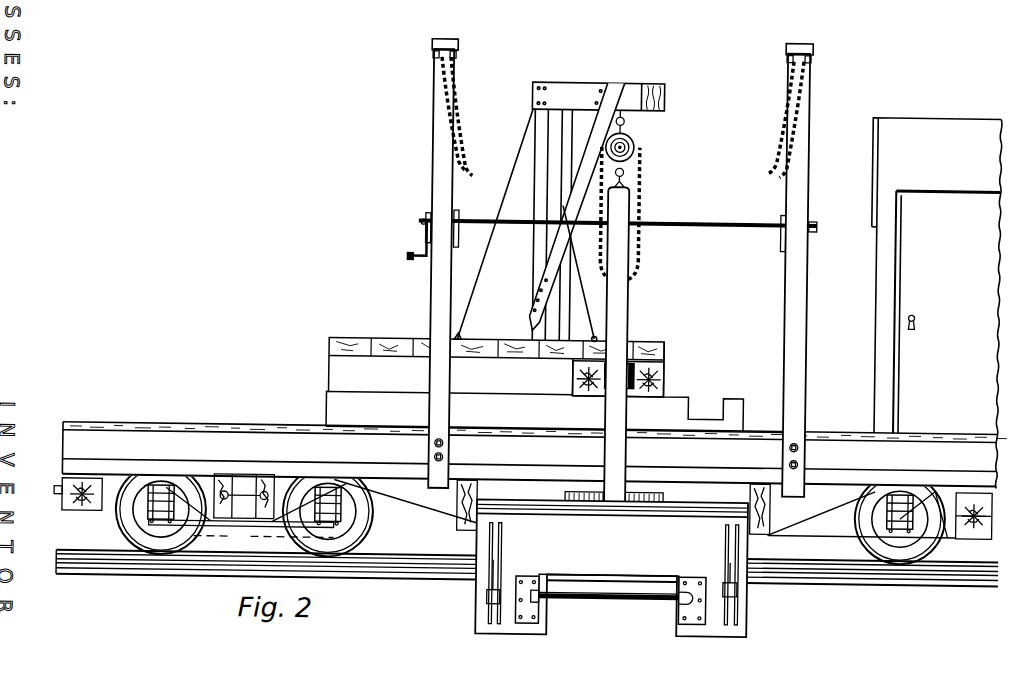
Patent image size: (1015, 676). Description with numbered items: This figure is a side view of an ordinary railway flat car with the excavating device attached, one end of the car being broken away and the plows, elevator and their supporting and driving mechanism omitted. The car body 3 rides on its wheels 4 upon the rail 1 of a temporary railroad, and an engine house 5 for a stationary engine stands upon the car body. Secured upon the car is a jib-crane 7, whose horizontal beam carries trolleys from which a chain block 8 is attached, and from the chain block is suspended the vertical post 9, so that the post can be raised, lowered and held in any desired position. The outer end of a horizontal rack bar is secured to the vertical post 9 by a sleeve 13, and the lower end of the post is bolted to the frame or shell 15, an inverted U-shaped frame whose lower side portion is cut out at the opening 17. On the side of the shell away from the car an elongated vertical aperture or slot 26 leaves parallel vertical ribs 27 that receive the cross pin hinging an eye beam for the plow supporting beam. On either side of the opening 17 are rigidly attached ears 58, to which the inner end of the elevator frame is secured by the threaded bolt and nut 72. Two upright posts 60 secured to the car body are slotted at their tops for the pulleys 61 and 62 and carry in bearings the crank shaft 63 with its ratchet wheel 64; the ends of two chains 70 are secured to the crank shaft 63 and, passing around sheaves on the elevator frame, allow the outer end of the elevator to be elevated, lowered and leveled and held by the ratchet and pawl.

The rail 1 is at (822, 581).
The car body 3 is at (63, 452).
The wheels 4 is at (948, 546).
The engine house 5 is at (869, 165).
The jib-crane 7 is at (572, 92).
The chain block 8 is at (631, 146).
The vertical post 9 is at (627, 297).
The sleeve 13 is at (664, 366).
The frame or shell 15 is at (611, 568).
The cut-out opening 17 is at (609, 585).
The elongated vertical aperture or slot 26 is at (489, 598).
The parallel vertical ribs 27 is at (750, 546).
The ears 58 is at (542, 614).
The upright posts 60 is at (429, 300).
The pulley 61 is at (453, 54).
The pulley 62 is at (429, 52).
The crank shaft 63 is at (617, 224).
The ratchet wheel 64 is at (424, 221).
The chains 70 is at (622, 127).
The threaded bolt and nut 72 is at (608, 607).